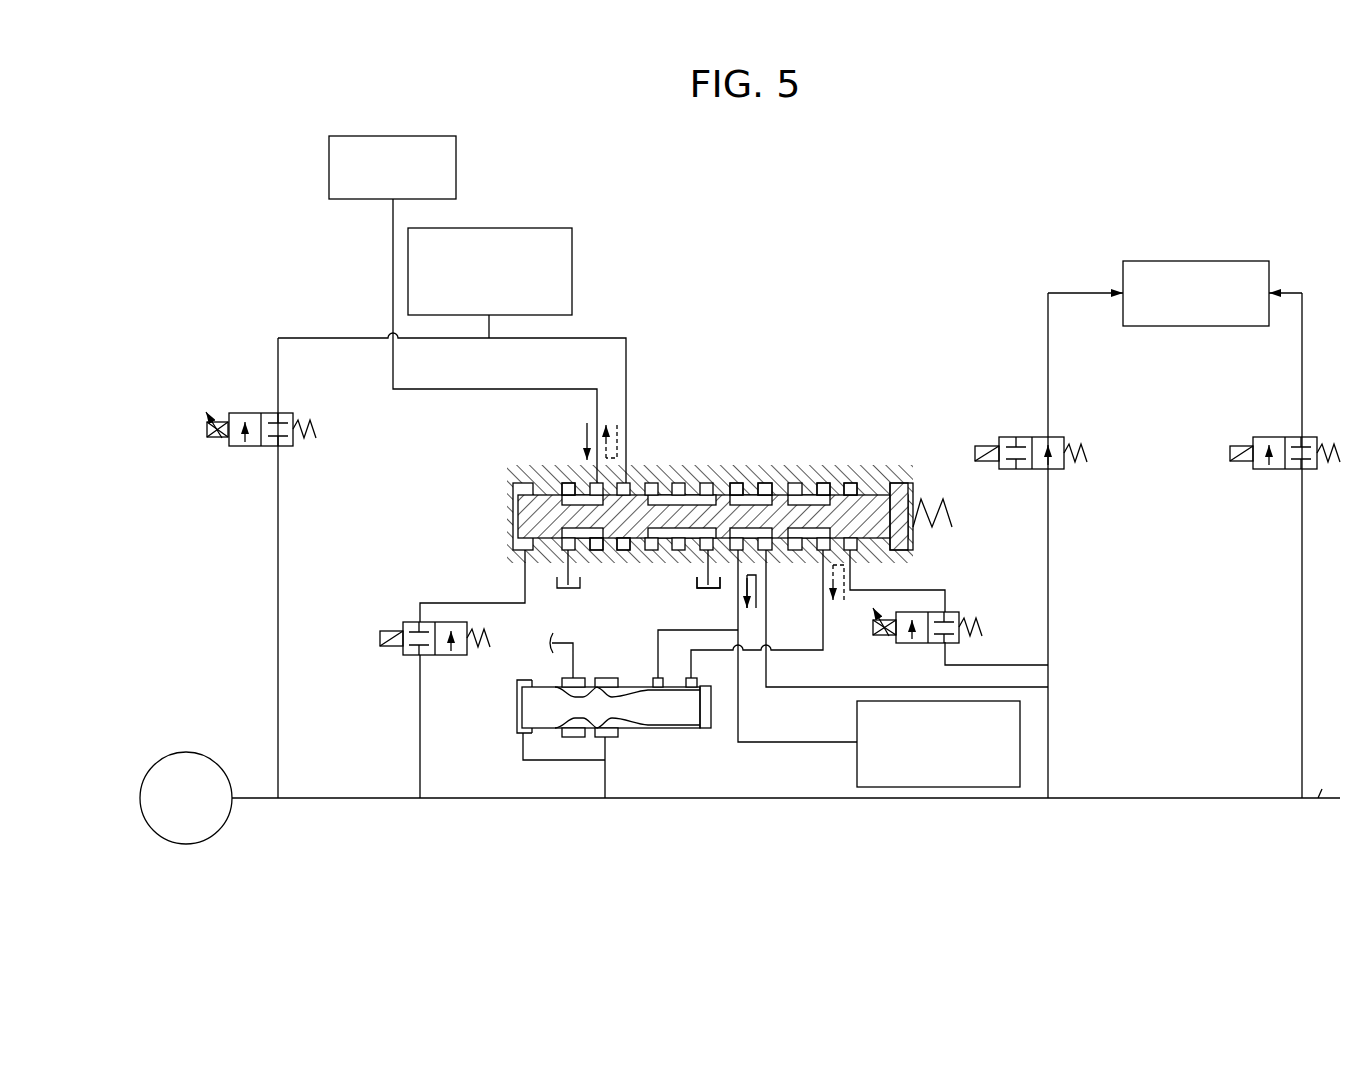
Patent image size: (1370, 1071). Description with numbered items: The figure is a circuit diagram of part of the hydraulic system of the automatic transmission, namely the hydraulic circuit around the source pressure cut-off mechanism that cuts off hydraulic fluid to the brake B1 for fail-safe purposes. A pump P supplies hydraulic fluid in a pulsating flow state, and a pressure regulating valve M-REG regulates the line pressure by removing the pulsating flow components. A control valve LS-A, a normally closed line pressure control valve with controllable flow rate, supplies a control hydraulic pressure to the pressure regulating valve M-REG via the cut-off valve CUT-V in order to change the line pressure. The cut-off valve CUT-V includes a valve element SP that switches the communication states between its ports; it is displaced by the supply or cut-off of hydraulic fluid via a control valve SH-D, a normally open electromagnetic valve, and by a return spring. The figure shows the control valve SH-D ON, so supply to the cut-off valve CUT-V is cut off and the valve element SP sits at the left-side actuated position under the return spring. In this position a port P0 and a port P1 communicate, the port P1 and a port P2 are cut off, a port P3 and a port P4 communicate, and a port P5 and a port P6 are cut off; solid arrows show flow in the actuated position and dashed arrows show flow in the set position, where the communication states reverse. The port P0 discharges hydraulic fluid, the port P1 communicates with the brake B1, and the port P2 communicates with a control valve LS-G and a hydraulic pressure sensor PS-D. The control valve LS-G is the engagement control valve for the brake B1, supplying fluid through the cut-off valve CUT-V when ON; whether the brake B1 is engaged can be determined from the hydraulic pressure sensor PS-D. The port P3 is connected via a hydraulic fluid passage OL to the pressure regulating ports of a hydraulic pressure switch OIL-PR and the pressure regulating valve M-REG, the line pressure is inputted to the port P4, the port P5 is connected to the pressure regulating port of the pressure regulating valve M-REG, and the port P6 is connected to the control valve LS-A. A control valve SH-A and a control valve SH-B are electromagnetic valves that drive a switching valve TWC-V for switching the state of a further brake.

The brake B1 is at (434, 136).
The hydraulic pressure sensor PS-D is at (551, 226).
The switching valve TWC-V is at (1233, 262).
The hydraulic pressure switch OIL-PR is at (986, 787).
The control valve LS-G is at (245, 405).
The control valve SH-D is at (408, 605).
The control valve LS-A is at (957, 602).
The control valve SH-B is at (1067, 481).
The control valve SH-A is at (1275, 421).
The cut-off valve CUT-V is at (694, 502).
The valve element SP is at (515, 522).
The port P0 is at (568, 483).
The port P1 is at (597, 550).
The port P2 is at (625, 550).
The port P3 is at (738, 483).
The port P4 is at (766, 483).
The port P5 is at (823, 483).
The port P6 is at (850, 483).
The hydraulic fluid passage OL is at (665, 628).
The pressure regulating valve M-REG is at (515, 735).
The pump P is at (186, 798).